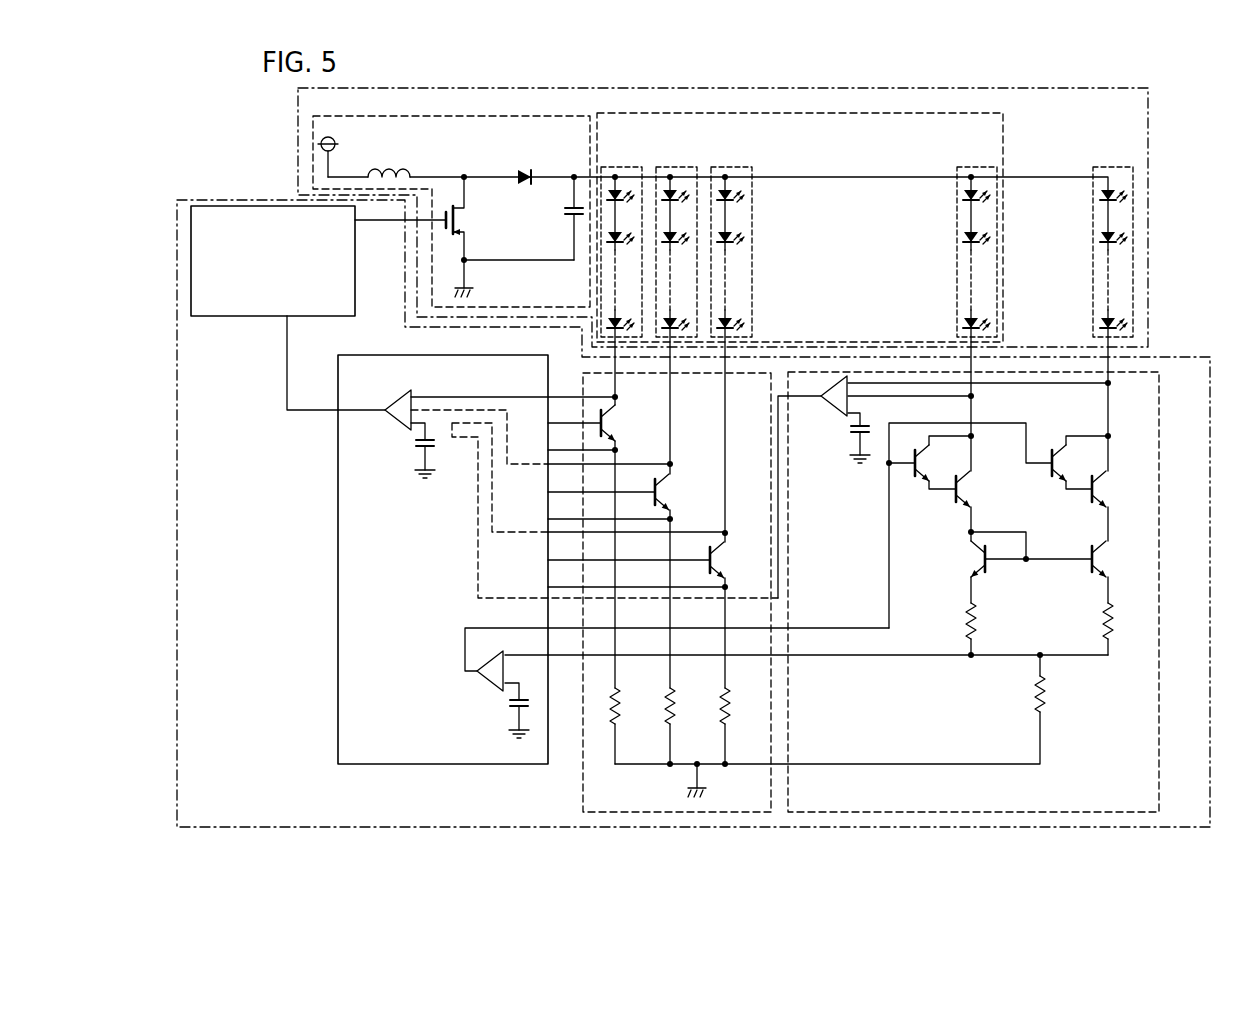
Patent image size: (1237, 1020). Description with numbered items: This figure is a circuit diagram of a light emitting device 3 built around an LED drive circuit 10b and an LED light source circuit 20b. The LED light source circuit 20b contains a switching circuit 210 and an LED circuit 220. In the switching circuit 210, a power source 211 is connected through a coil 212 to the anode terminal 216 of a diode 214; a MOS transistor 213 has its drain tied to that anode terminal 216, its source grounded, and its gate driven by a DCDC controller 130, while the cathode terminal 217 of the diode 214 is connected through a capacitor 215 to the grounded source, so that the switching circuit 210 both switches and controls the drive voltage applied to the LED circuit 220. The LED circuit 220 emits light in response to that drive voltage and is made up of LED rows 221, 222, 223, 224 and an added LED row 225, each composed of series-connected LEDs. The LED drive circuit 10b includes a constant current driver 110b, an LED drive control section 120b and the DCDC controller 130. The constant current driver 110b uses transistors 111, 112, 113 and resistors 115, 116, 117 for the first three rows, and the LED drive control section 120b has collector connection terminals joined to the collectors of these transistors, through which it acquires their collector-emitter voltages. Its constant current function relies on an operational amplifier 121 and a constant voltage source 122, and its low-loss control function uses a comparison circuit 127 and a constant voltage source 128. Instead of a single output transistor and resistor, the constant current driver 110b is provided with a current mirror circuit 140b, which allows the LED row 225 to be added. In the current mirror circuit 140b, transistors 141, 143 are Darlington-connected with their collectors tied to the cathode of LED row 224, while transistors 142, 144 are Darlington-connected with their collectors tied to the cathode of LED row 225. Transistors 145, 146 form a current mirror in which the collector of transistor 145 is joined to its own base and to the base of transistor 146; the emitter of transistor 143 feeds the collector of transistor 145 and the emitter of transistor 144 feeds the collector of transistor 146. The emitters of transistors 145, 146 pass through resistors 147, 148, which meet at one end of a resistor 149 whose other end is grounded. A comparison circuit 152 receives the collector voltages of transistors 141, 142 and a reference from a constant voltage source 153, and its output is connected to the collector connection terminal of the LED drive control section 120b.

The light emitting device 3 is at (1230, 108).
The LED drive circuit 10b is at (217, 200).
The LED light source circuit 20b is at (1149, 118).
The switching circuit 210 is at (391, 116).
The power source 211 is at (336, 141).
The coil 212 is at (394, 171).
The MOS transistor 213 is at (467, 222).
The diode 214 is at (525, 170).
The capacitor 215 is at (566, 221).
The anode terminal 216 is at (464, 175).
The cathode terminal 217 is at (574, 175).
The LED circuit 220 is at (797, 116).
The LED row 221 is at (615, 165).
The LED row 222 is at (670, 165).
The LED row 223 is at (725, 165).
The LED row 224 is at (971, 165).
The LED row 225 is at (1108, 165).
The DCDC controller 130 is at (221, 317).
The LED drive control section 120b is at (362, 356).
The comparison circuit 127 is at (405, 429).
The constant voltage source 128 is at (418, 451).
The operational amplifier 121 is at (498, 687).
The constant voltage source 122 is at (515, 709).
The constant current driver 110b is at (583, 788).
The transistor 111 is at (610, 428).
The transistor 112 is at (665, 497).
The transistor 113 is at (720, 565).
The resistor 115 is at (620, 703).
The resistor 116 is at (675, 703).
The resistor 117 is at (730, 703).
The current mirror circuit 140b is at (1160, 421).
The transistor 141 is at (920, 466).
The transistor 142 is at (1057, 466).
The transistor 143 is at (961, 492).
The transistor 144 is at (1100, 493).
The transistor 145 is at (977, 557).
The transistor 146 is at (1100, 560).
The resistor 147 is at (976, 623).
The resistor 148 is at (1112, 623).
The resistor 149 is at (1043, 703).
The comparison circuit 152 is at (842, 412).
The constant voltage source 153 is at (858, 437).